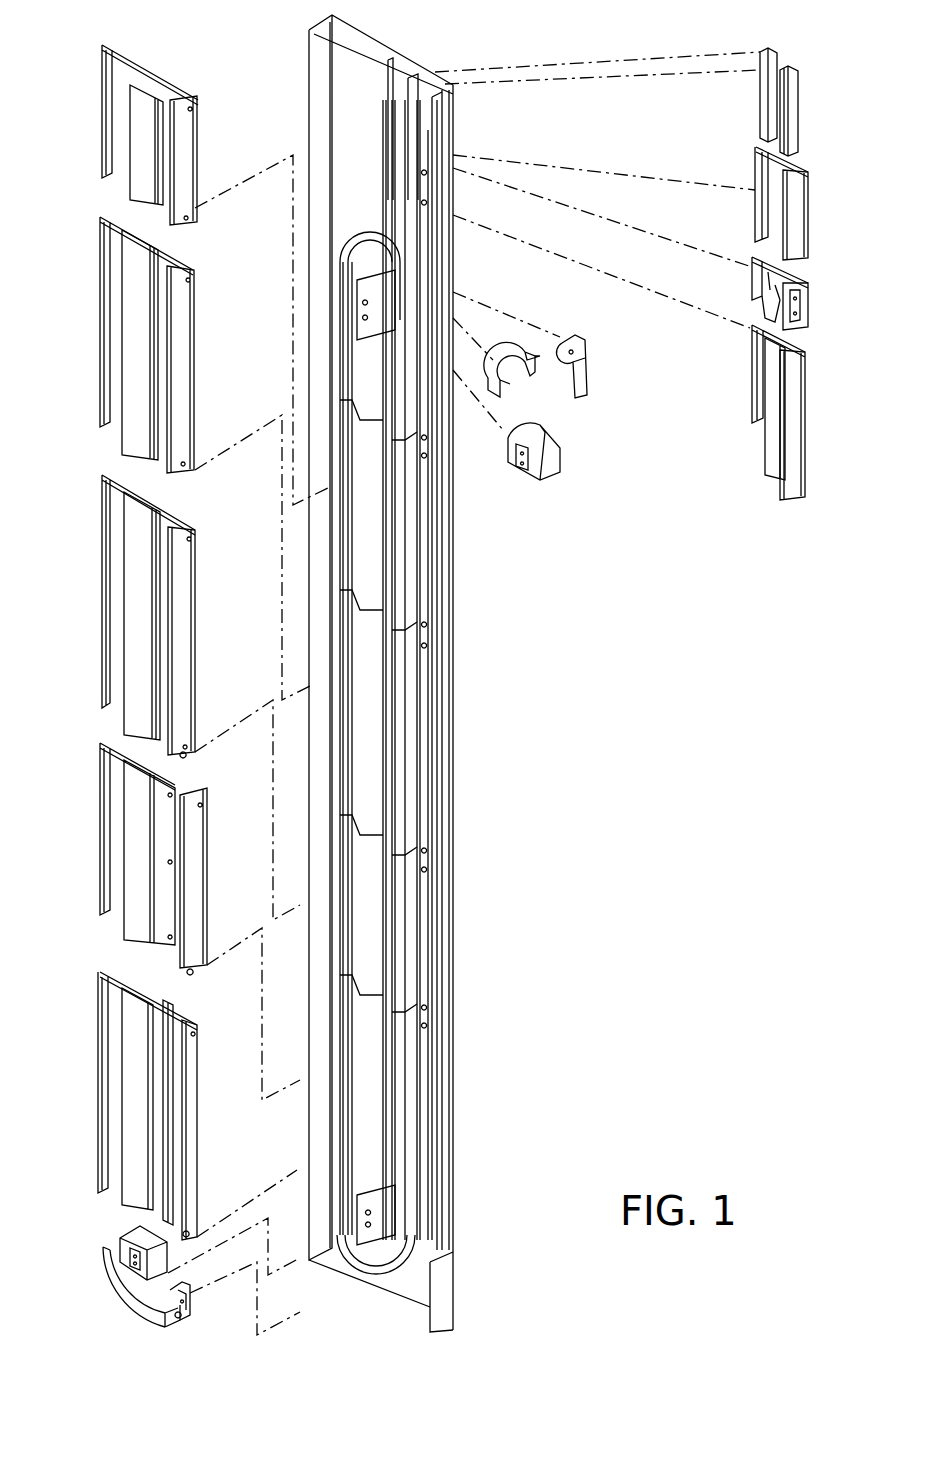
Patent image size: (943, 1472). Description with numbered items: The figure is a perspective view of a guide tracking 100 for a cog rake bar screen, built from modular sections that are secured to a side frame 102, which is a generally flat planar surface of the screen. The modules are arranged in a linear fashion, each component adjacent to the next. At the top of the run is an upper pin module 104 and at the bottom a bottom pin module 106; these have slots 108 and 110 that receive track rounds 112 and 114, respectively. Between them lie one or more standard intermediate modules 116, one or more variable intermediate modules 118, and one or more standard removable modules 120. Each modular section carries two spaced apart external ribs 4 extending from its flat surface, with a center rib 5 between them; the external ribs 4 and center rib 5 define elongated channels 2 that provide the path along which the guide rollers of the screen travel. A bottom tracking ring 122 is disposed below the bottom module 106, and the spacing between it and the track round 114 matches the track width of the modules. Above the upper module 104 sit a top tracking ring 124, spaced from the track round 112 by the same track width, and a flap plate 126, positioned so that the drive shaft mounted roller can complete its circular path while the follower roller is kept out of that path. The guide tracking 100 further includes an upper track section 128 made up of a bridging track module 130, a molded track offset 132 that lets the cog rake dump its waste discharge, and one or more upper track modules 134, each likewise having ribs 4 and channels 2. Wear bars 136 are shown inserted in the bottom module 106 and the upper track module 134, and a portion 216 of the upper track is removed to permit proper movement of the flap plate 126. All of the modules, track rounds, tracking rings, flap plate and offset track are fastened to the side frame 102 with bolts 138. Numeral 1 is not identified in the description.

The side plate 1 is at (118, 245).
The elongated channels 2 is at (360, 752).
The external ribs 4 is at (180, 162).
The center rib 5 is at (140, 185).
The guide tracking 100 is at (618, 608).
The side frame 102 is at (381, 84).
The upper pin module 104 is at (100, 95).
The bottom pin module 106 is at (100, 1025).
The slot 108 is at (148, 85).
The slot 110 is at (145, 1207).
The track round 112 is at (555, 465).
The track round 114 is at (120, 1240).
The standard intermediate module 116 is at (100, 577).
The variable intermediate module 118 is at (100, 320).
The standard removable module 120 is at (100, 815).
The bottom tracking ring 122 is at (125, 1305).
The top tracking ring 124 is at (540, 390).
The flap plate 126 is at (588, 345).
The upper track section 128 is at (790, 507).
The bridging track module 130 is at (805, 435).
The molded track offset 132 is at (808, 296).
The upper track module 134 is at (810, 215).
The wear bars 136 is at (785, 68).
The bolts 138 is at (185, 757).
The portion of the track 216 is at (770, 445).